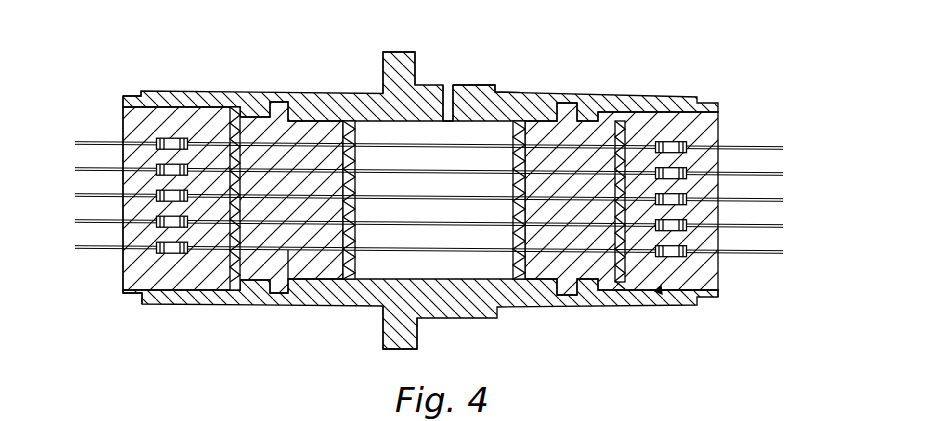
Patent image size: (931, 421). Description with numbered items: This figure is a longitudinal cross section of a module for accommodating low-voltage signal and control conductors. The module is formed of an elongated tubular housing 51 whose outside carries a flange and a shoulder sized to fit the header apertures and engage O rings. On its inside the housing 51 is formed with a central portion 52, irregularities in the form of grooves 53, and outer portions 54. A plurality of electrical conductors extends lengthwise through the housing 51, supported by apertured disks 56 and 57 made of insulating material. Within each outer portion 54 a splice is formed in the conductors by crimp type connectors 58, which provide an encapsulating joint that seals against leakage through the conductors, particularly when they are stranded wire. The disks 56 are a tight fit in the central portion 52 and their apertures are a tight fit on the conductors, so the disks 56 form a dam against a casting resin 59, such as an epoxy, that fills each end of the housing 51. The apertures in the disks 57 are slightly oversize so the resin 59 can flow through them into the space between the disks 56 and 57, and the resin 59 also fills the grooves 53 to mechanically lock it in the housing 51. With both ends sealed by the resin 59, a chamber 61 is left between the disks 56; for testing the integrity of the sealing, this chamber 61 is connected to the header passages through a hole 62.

The tubular housing 51 is at (180, 91).
The central portion 52 is at (305, 108).
The grooves 53 is at (574, 110).
The outer portions 54 is at (131, 95).
The apertured disks 56 is at (350, 125).
The apertured disks 57 is at (622, 285).
The crimp type connectors 58 is at (688, 256).
The casting resin 59 is at (688, 282).
The chamber 61 is at (438, 272).
The hole 62 is at (453, 100).